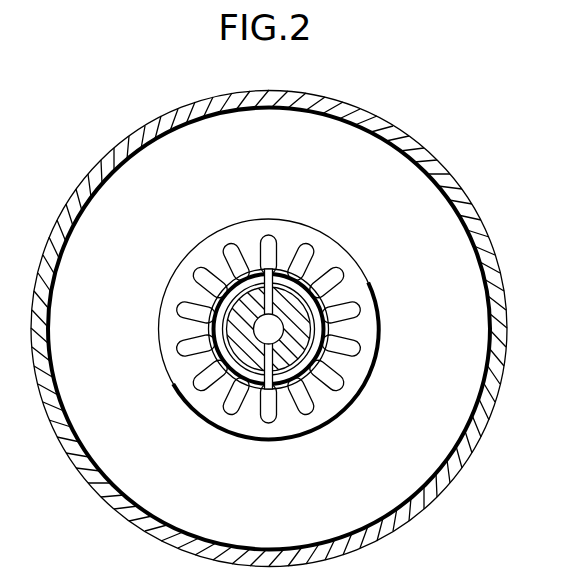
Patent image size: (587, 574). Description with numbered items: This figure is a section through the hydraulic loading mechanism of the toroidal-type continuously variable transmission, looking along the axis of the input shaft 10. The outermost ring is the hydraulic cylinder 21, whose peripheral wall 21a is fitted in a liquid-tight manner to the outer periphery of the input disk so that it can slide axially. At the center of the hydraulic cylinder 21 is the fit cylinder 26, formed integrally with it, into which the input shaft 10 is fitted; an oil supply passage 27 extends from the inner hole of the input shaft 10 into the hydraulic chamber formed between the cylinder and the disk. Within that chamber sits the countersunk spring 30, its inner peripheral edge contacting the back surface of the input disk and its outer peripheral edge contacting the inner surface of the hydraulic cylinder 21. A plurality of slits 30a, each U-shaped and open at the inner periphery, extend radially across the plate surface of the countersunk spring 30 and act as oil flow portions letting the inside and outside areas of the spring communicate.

The input shaft 10 is at (233, 325).
The hydraulic cylinder 21 is at (362, 152).
The peripheral wall 21a is at (452, 173).
The fit cylinder 26 is at (370, 373).
The oil supply passage 27 is at (287, 270).
The countersunk spring 30 is at (340, 247).
The slits 30a is at (223, 258).